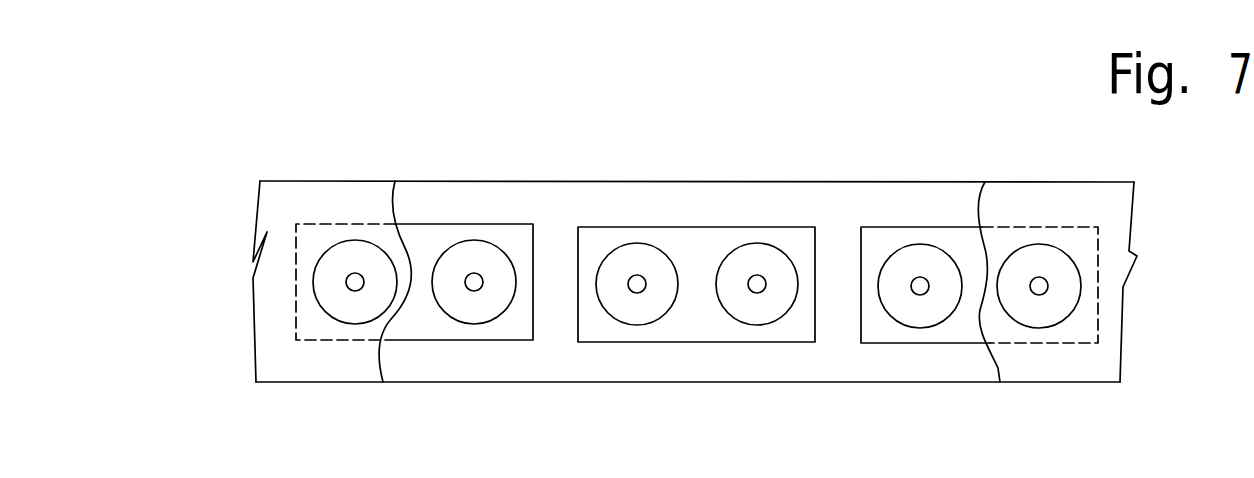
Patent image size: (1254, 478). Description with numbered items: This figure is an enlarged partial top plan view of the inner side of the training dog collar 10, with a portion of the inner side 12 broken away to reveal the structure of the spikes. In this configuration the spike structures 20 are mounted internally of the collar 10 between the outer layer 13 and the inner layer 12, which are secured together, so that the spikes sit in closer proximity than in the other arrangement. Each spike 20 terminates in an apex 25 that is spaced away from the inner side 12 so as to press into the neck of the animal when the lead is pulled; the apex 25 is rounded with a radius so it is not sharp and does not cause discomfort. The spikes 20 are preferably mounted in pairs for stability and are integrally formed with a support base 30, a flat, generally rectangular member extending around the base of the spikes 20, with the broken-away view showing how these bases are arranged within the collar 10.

The training dog collar 10 is at (347, 130).
The inner side 12 is at (267, 358).
The outer side 13 is at (783, 197).
The spike structures 20 is at (740, 302).
The apex 25 is at (756, 275).
The support base 30 is at (597, 233).